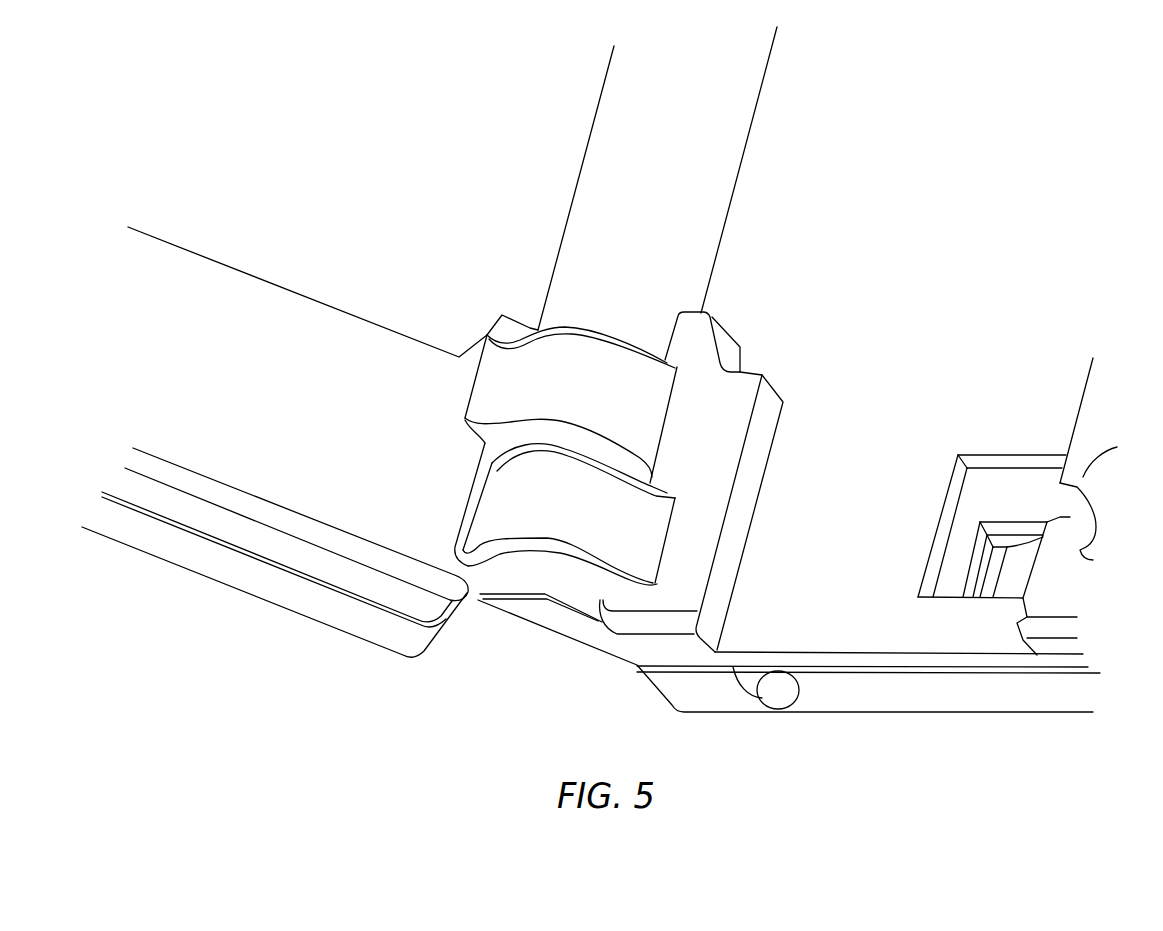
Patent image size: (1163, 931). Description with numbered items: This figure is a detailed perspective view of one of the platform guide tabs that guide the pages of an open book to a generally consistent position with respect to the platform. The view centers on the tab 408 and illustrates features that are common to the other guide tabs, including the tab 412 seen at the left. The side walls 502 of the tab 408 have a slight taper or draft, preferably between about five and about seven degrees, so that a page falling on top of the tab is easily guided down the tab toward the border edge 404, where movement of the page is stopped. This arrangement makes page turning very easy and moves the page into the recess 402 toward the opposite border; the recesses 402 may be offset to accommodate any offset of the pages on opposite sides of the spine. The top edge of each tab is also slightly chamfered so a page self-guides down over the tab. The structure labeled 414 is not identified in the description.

The recess 402 is at (371, 156).
The border edge 404 is at (230, 233).
The tab 408 is at (710, 357).
The tab 412 is at (499, 295).
The arm 414 is at (652, 252).
The side wall 502 is at (705, 313).